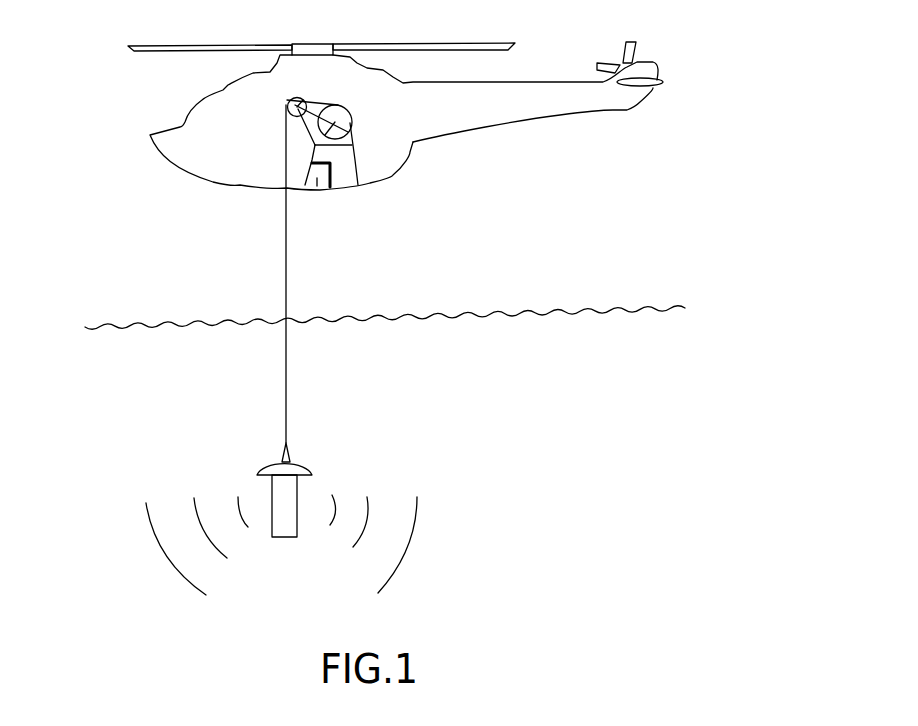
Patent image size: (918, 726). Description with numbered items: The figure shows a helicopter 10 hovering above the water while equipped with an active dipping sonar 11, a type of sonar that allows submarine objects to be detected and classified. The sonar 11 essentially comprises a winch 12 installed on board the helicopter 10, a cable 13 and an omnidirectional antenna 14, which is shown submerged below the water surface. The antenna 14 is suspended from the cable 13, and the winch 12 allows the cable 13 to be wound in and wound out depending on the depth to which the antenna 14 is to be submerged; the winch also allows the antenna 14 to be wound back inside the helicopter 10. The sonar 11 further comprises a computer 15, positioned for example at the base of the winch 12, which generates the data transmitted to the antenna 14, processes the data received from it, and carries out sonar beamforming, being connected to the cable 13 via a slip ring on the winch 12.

The helicopter 10 is at (492, 108).
The active dipping sonar 11 is at (142, 295).
The winch 12 is at (343, 167).
The cable 13 is at (286, 245).
The omnidirectional antenna 14 is at (283, 490).
The computer 15 is at (317, 182).